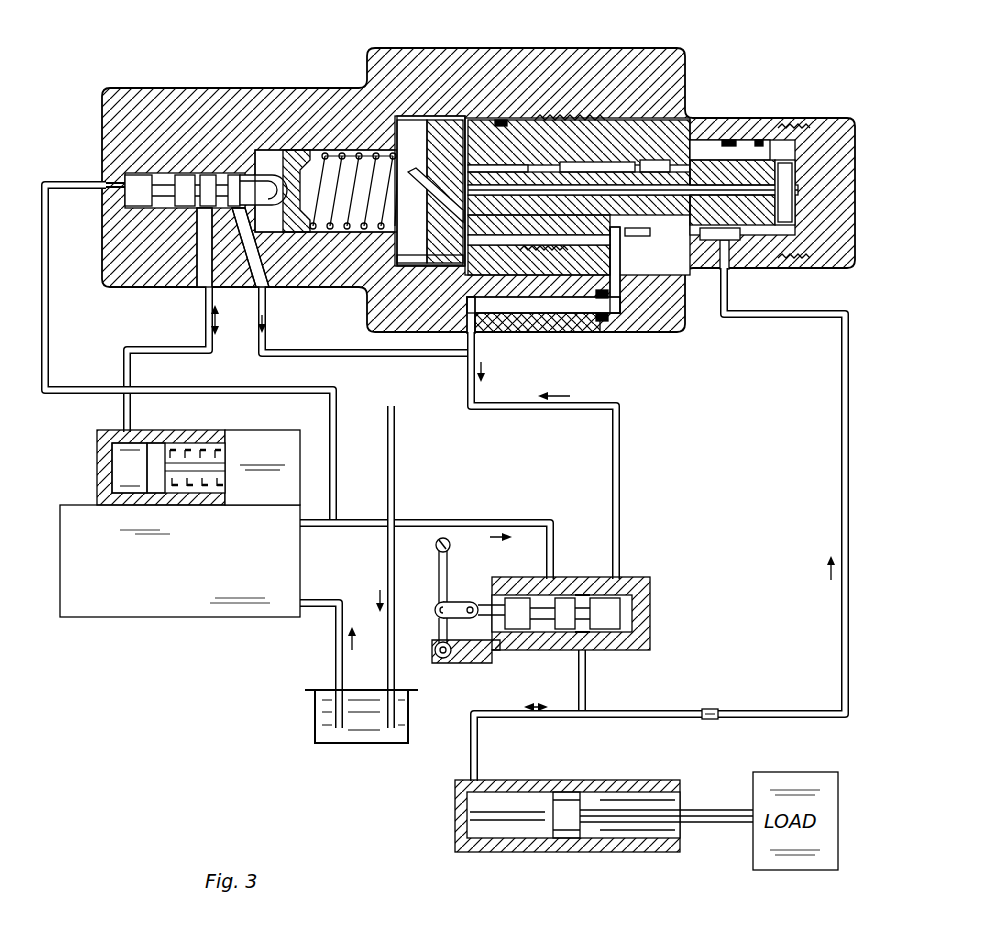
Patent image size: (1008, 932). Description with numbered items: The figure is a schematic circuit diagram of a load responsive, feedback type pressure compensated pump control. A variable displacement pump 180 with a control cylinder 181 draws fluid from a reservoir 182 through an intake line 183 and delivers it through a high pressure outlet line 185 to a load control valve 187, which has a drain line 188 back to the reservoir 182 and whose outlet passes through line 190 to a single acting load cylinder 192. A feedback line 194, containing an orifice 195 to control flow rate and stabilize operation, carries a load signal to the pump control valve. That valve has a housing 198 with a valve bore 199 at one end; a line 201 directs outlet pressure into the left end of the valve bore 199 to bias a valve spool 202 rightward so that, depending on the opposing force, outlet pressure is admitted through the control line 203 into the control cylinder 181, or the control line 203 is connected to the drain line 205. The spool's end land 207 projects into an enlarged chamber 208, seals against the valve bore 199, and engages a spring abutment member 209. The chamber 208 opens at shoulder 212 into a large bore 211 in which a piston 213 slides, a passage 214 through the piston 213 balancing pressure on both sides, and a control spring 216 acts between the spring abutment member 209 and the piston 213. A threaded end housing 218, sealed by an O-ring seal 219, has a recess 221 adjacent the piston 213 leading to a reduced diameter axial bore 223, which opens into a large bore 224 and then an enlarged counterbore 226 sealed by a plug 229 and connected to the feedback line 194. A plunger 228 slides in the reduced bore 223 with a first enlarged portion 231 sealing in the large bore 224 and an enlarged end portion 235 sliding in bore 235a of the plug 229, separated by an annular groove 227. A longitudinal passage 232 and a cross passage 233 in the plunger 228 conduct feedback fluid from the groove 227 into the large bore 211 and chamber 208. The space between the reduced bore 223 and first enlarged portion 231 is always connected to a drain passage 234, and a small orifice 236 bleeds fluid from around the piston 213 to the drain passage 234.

The pump 180 is at (170, 617).
The control cylinder 181 is at (105, 462).
The reservoir 182 is at (372, 742).
The intake line 183 is at (337, 650).
The outlet line 185 is at (325, 527).
The load control valve 187 is at (652, 620).
The drain line 188 is at (620, 488).
The line 190 is at (586, 682).
The load cylinder 192 is at (528, 800).
The feedback line 194 is at (840, 440).
The orifice 195 is at (712, 708).
The housing 198 is at (205, 96).
The valve bore 199 is at (108, 176).
The line 201 is at (189, 354).
The valve spool 202 is at (207, 175).
The control line 203 is at (160, 345).
The drain line 205 is at (280, 322).
The end land 207 is at (268, 180).
The chamber 208 is at (322, 154).
The spring abutment member 209 is at (290, 233).
The large bore 211 is at (418, 266).
The shoulder 212 is at (405, 122).
The piston 213 is at (458, 120).
The passage 214 is at (436, 194).
The control spring 216 is at (380, 228).
The end housing 218 is at (648, 48).
The O-ring seal 219 is at (512, 118).
The recess 221 is at (579, 197).
The reduced diameter axial bore 223 is at (560, 170).
The large bore 224 is at (632, 165).
The counterbore 226 is at (740, 140).
The annular groove 227 is at (662, 220).
The plunger 228 is at (608, 150).
The plug 229 is at (808, 262).
The first enlarged portion 231 is at (625, 240).
The longitudinal passage 232 is at (732, 172).
The cross passage 233 is at (732, 210).
The drain passage 234 is at (605, 322).
The enlarged end portion 235 is at (796, 188).
The bore 235a is at (806, 126).
The orifice 236 is at (540, 250).